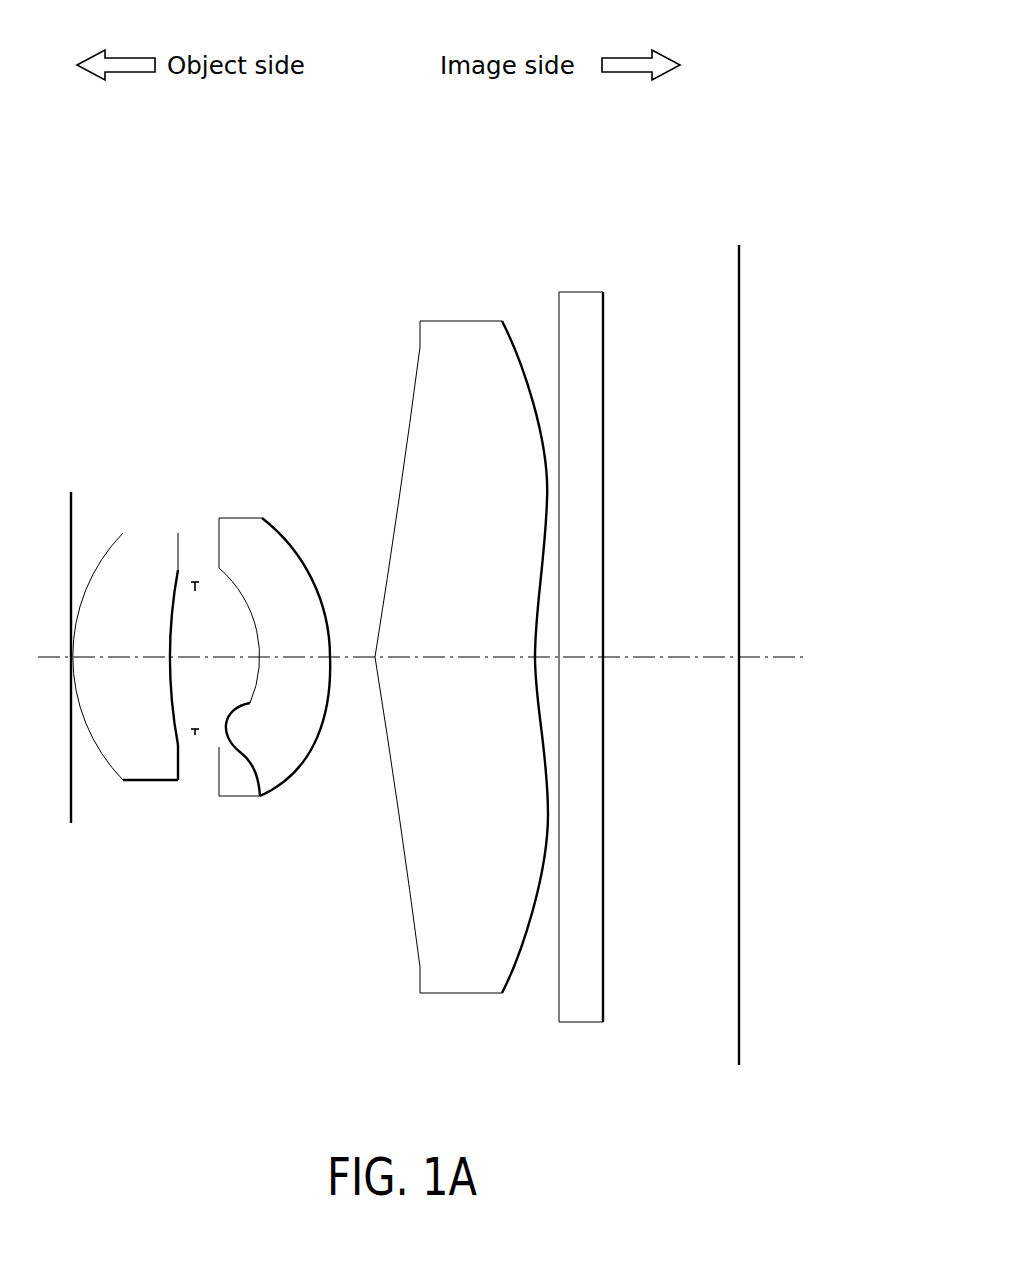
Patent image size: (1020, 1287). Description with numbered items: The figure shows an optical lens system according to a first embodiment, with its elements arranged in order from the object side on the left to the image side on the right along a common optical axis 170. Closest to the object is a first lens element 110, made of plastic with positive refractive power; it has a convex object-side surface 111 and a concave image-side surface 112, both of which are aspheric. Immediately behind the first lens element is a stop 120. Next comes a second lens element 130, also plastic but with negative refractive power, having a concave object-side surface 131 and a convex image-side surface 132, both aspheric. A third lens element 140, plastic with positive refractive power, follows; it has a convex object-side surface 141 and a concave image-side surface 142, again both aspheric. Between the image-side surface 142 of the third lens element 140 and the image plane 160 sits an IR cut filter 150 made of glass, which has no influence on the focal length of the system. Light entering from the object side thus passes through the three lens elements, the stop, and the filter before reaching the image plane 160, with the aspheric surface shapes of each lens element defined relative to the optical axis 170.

The first lens element 110 is at (126, 658).
The object-side surface 111 is at (98, 753).
The image-side surface 112 is at (182, 722).
The stop 120 is at (195, 588).
The second lens element 130 is at (273, 647).
The object-side surface 131 is at (256, 794).
The image-side surface 132 is at (320, 790).
The third lens element 140 is at (434, 625).
The object-side surface 141 is at (393, 783).
The image-side surface 142 is at (537, 693).
The IR cut filter 150 is at (583, 291).
The image plane 160 is at (739, 416).
The optical axis 170 is at (687, 657).